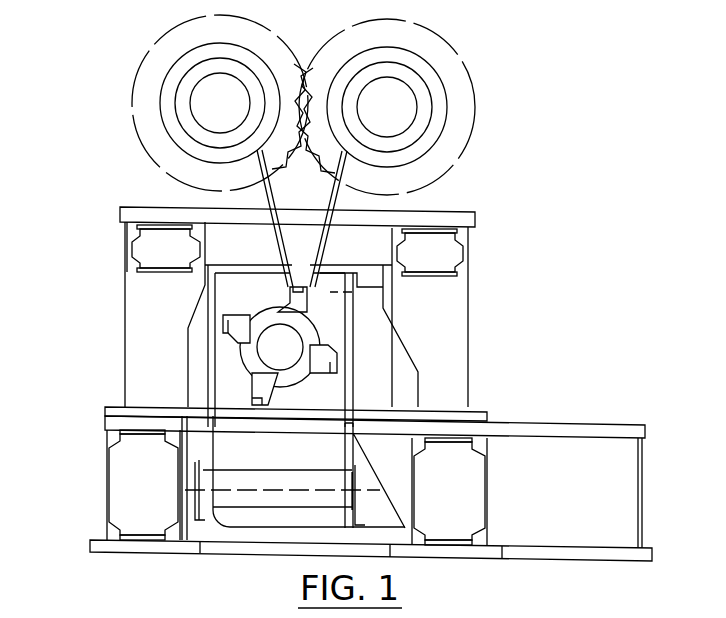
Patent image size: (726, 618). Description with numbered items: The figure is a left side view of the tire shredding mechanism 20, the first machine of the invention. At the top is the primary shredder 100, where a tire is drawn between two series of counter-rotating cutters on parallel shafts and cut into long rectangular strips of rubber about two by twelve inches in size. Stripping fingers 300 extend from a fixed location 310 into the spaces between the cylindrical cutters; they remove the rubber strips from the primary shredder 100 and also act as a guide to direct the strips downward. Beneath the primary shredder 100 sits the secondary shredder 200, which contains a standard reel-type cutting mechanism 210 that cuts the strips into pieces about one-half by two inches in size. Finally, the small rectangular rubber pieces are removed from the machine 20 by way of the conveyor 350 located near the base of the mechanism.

The tire shredding mechanism 20 is at (93, 405).
The primary shredder 100 is at (146, 38).
The secondary shredder 200 is at (258, 316).
The reel-type cutting mechanism 210 is at (337, 370).
The stripping fingers 300 is at (333, 208).
The fixed location 310 is at (300, 271).
The conveyor 350 is at (213, 525).